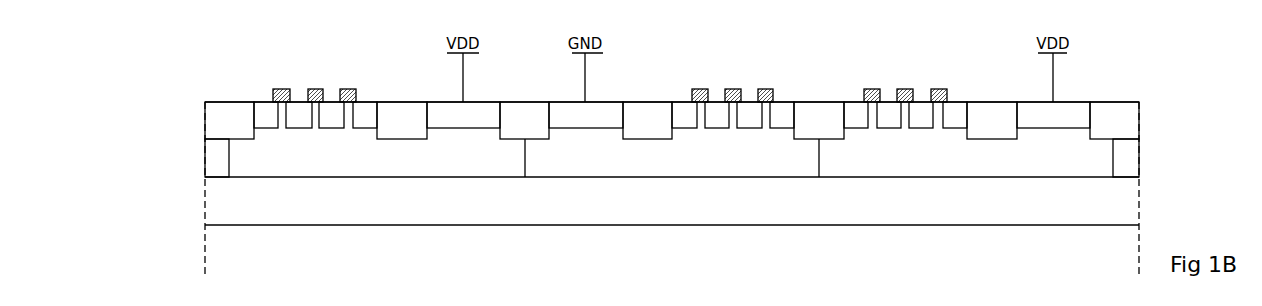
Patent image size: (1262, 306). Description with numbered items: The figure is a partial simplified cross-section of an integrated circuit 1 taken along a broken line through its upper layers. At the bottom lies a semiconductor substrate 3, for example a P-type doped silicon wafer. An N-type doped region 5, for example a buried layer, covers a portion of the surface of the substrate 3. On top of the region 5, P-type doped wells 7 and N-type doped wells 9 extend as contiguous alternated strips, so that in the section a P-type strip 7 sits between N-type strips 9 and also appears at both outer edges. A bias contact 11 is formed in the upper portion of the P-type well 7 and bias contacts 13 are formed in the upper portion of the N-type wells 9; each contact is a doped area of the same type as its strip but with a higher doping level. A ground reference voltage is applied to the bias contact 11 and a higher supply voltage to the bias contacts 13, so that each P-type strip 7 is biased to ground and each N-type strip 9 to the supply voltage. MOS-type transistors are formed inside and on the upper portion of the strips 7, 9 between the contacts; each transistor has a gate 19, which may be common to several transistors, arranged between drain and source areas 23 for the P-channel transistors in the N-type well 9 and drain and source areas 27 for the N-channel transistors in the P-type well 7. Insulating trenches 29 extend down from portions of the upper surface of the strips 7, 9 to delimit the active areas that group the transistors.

The integrated circuit 1 is at (206, 71).
The semiconductor substrate 3 is at (226, 250).
The N-type doped region 5 is at (226, 204).
The P-type doped well 7 is at (212, 154).
The N-type doped well 9 is at (350, 170).
The bias contact 11 is at (570, 129).
The bias contact 13 is at (444, 117).
The gate 19 is at (349, 88).
The drain and source areas 23 is at (784, 112).
The drain and source areas 27 is at (296, 110).
The insulating trench 29 is at (229, 110).